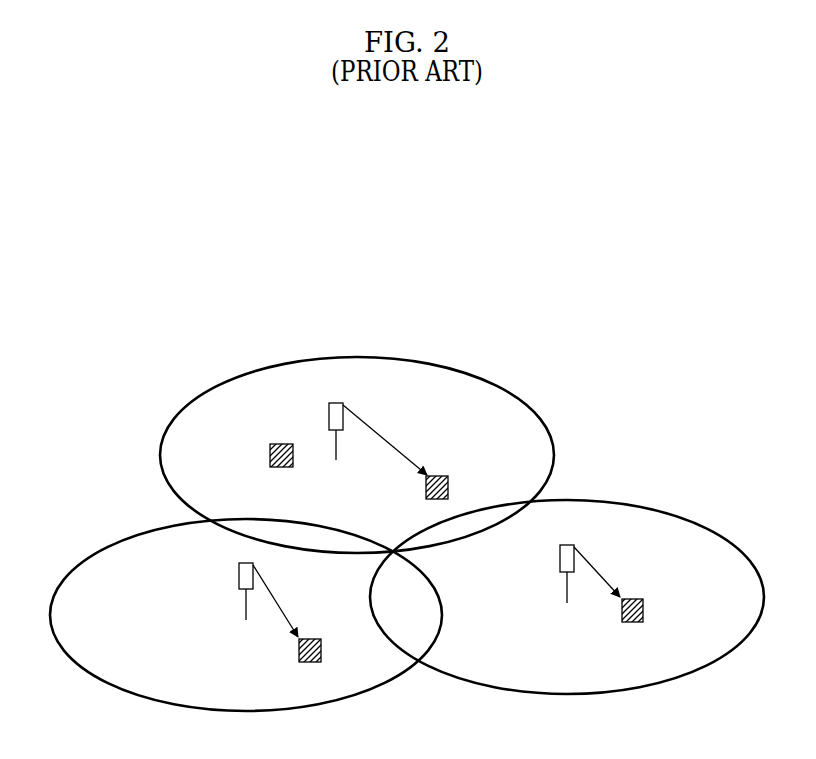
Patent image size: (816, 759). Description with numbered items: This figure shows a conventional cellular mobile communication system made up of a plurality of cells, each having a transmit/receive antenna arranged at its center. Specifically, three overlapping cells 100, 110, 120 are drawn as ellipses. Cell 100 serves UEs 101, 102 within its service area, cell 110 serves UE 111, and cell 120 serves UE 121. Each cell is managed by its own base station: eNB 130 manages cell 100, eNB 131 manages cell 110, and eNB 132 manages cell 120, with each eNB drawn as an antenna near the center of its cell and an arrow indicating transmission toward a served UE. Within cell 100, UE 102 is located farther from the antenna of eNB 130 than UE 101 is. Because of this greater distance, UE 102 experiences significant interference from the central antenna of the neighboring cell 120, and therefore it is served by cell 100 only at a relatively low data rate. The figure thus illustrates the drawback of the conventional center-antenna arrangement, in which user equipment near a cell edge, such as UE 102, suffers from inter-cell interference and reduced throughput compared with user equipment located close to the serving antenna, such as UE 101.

The cell 100 is at (372, 354).
The cell 110 is at (148, 530).
The cell 120 is at (603, 502).
The eNB 130 is at (331, 403).
The eNB 131 is at (239, 577).
The eNB 132 is at (560, 558).
The UE 101 is at (270, 444).
The UE 102 is at (448, 476).
The UE 111 is at (321, 639).
The UE 121 is at (643, 599).